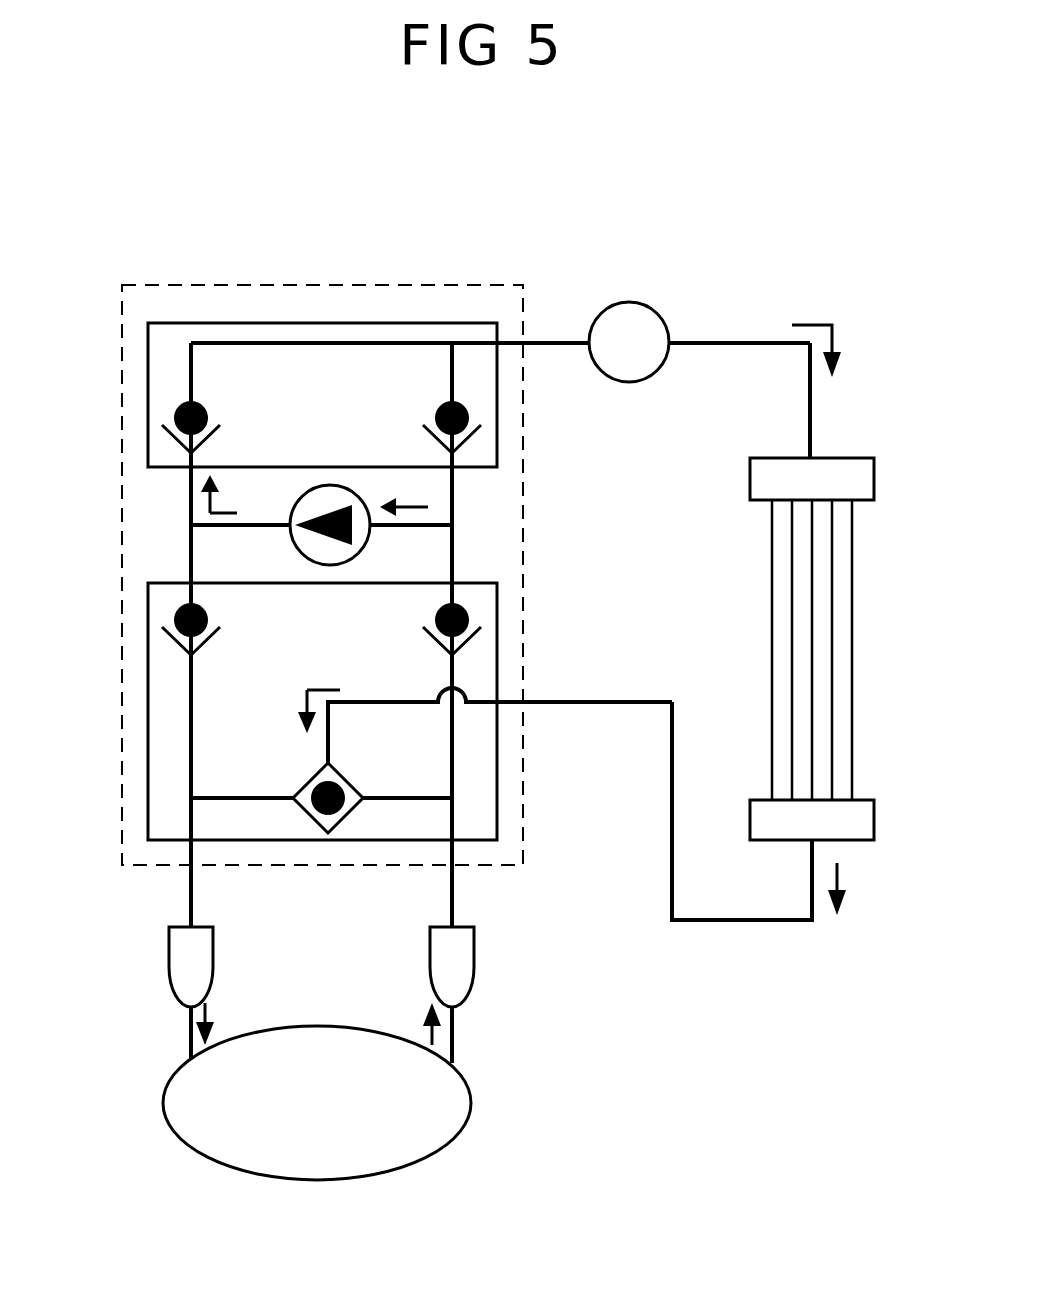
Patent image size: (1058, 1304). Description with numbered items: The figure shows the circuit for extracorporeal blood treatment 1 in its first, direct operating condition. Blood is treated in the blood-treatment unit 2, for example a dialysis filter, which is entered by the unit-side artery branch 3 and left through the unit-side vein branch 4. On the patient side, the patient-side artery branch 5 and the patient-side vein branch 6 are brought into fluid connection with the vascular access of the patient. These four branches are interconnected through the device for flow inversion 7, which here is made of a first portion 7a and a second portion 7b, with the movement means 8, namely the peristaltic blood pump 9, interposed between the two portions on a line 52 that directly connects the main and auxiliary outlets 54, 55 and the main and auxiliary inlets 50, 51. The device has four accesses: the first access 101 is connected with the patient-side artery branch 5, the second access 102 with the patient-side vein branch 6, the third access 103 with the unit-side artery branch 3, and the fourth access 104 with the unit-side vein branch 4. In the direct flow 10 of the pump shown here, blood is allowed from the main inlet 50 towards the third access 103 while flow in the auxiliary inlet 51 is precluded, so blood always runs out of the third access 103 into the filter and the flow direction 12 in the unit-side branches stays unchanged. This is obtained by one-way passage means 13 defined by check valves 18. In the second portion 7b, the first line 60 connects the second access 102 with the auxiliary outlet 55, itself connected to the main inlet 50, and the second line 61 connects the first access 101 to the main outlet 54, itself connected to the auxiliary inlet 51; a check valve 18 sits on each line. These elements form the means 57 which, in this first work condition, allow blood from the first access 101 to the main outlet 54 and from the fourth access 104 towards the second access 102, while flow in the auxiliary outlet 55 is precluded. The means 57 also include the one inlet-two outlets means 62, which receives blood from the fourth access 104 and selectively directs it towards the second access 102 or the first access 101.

The circuit for extracorporeal blood treatment 1 is at (660, 1040).
The blood-treatment unit 2 is at (850, 568).
The unit-side artery branch 3 is at (758, 342).
The unit-side vein branch 4 is at (755, 923).
The patient-side artery branch 5 is at (457, 1045).
The patient-side vein branch 6 is at (187, 1043).
The device for flow inversion 7 is at (120, 504).
The first portion 7a is at (354, 322).
The second portion 7b is at (395, 843).
The movement means 8 is at (320, 510).
The blood pump 9 is at (297, 554).
The direct flow 10 is at (340, 475).
The flow direction 12 is at (834, 330).
The one-way passage means 13 is at (173, 390).
The check valve 18 is at (176, 408).
The main inlet 50 is at (190, 493).
The auxiliary inlet 51 is at (455, 500).
The line 52 is at (420, 528).
The main outlet 54 is at (456, 575).
The auxiliary outlet 55 is at (190, 572).
The means for allowing blood flow 57 is at (210, 673).
The first line 60 is at (190, 768).
The second line 61 is at (455, 758).
The one inlet-two outlets means 62 is at (318, 826).
The first access 101 is at (456, 901).
The second access 102 is at (185, 893).
The third access 103 is at (557, 342).
The fourth access 104 is at (620, 704).